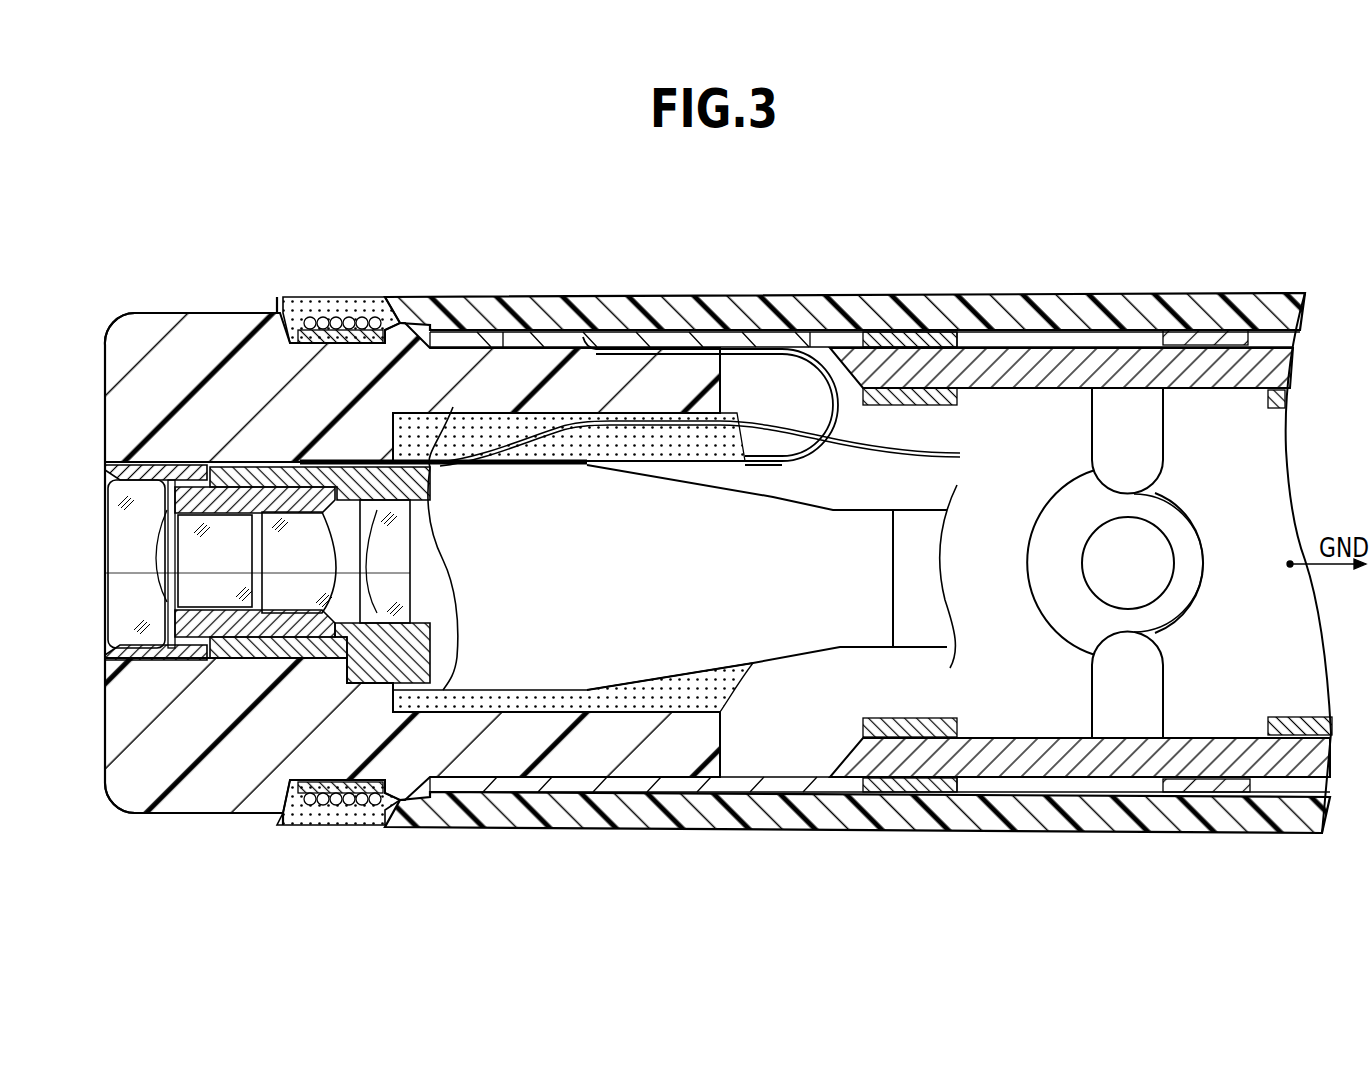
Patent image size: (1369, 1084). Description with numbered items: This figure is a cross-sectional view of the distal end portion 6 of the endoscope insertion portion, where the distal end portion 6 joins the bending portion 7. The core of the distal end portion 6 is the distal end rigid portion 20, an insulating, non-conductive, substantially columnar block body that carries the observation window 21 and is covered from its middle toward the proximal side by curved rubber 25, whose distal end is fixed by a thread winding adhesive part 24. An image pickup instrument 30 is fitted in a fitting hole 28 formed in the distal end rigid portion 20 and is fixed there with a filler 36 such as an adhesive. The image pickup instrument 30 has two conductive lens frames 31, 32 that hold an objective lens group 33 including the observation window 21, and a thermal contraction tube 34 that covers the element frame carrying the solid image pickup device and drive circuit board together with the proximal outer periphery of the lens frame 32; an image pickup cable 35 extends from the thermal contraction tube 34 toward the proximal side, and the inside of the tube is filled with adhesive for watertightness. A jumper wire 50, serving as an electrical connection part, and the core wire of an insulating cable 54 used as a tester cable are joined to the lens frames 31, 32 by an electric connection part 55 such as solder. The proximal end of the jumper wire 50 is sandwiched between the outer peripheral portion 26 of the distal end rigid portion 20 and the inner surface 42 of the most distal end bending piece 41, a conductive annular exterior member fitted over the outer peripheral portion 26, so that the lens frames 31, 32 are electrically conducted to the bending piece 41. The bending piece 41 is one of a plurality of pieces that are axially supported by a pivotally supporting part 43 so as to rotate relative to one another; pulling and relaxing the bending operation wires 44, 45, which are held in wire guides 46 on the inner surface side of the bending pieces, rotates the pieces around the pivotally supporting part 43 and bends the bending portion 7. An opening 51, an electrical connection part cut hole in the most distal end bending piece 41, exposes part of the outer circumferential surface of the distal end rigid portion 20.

The distal end portion 6 is at (390, 250).
The bending portion 7 is at (1163, 250).
The distal end rigid portion 20 is at (215, 312).
The observation window 21 is at (105, 512).
The thread winding adhesive part 24 is at (325, 297).
The curved rubber 25 is at (793, 330).
The outer peripheral portion 26 is at (623, 347).
The fitting hole 28 is at (372, 657).
The image pickup instrument 30 is at (557, 660).
The lens frame 31 is at (202, 575).
The lens frame 32 is at (290, 605).
The objective lens group 33 is at (257, 585).
The thermal contraction tube 34 is at (665, 652).
The image pickup cable 35 is at (957, 700).
The filler 36 is at (466, 430).
The most distal end bending piece 41 is at (992, 345).
The inner surface 42 is at (678, 360).
The pivotally supporting part 43 is at (1150, 560).
The bending operation wire 44 is at (1060, 363).
The bending operation wire 45 is at (1060, 760).
The wire guide 46 is at (905, 337).
The jumper wire 50 is at (825, 347).
The opening 51 is at (557, 328).
The insulating cable 54 is at (753, 478).
The electric connection part 55 is at (310, 460).